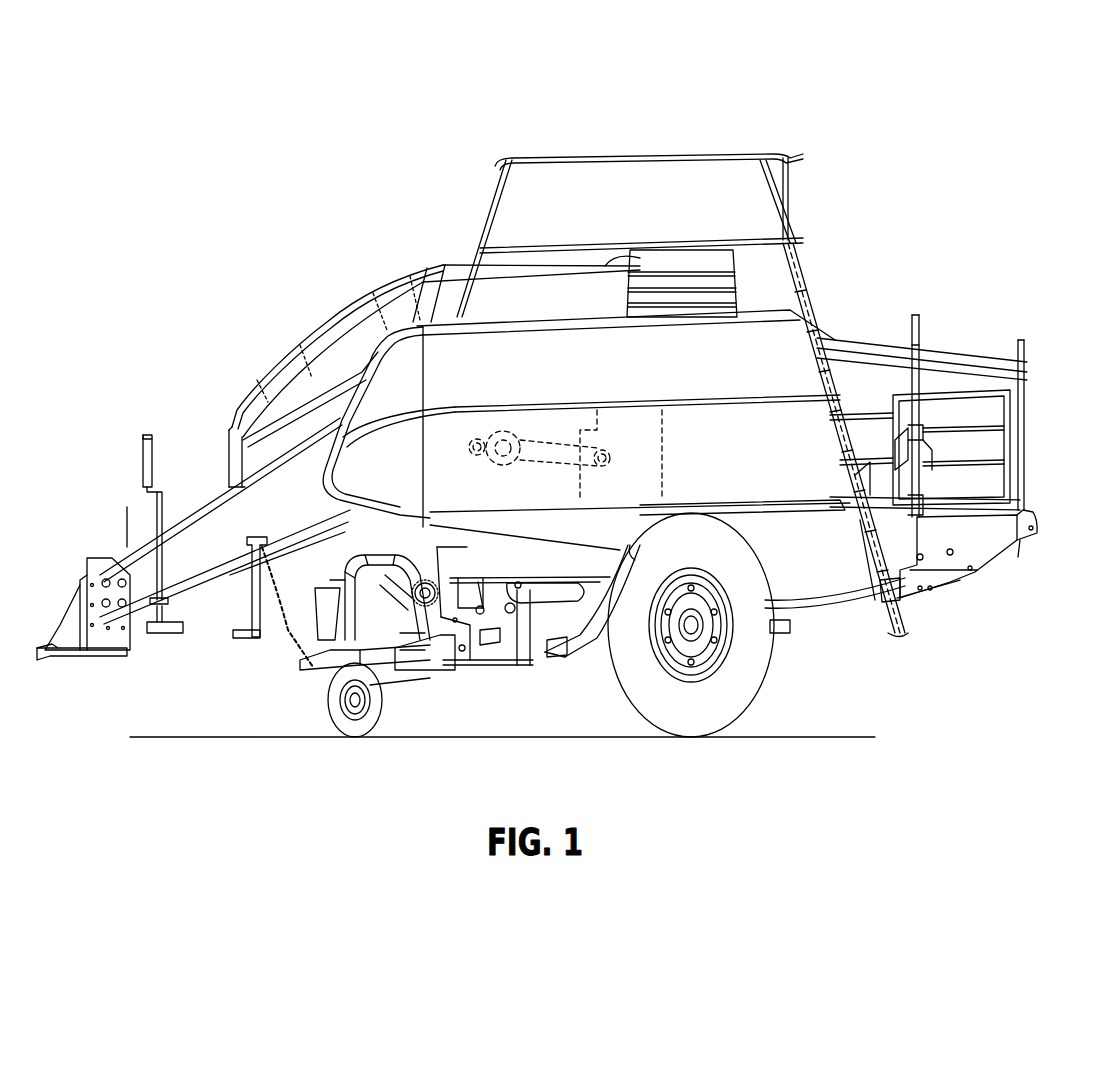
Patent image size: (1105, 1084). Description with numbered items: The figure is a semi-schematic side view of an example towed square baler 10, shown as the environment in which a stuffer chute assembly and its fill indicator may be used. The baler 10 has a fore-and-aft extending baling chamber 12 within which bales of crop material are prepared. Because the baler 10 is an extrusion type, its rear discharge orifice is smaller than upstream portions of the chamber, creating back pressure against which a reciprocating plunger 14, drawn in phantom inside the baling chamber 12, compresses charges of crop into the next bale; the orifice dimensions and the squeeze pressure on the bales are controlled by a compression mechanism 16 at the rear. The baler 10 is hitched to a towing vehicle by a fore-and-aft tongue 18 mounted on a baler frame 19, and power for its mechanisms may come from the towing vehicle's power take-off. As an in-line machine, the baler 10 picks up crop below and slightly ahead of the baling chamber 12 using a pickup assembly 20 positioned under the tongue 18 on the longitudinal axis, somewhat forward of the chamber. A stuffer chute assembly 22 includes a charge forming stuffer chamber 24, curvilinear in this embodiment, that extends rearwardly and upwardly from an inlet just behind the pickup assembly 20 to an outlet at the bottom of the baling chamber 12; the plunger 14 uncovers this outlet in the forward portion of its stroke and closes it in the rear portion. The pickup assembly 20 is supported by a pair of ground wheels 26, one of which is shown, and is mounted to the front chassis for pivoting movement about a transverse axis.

The baler 10 is at (837, 195).
The baling chamber 12 is at (857, 397).
The plunger 14 is at (635, 489).
The compression mechanism 16 is at (903, 453).
The tongue 18 is at (227, 510).
The baler frame 19 is at (830, 620).
The pickup assembly 20 is at (344, 666).
The stuffer chute assembly 22 is at (537, 672).
The stuffer chamber 24 is at (555, 636).
The ground wheels 26 is at (362, 728).